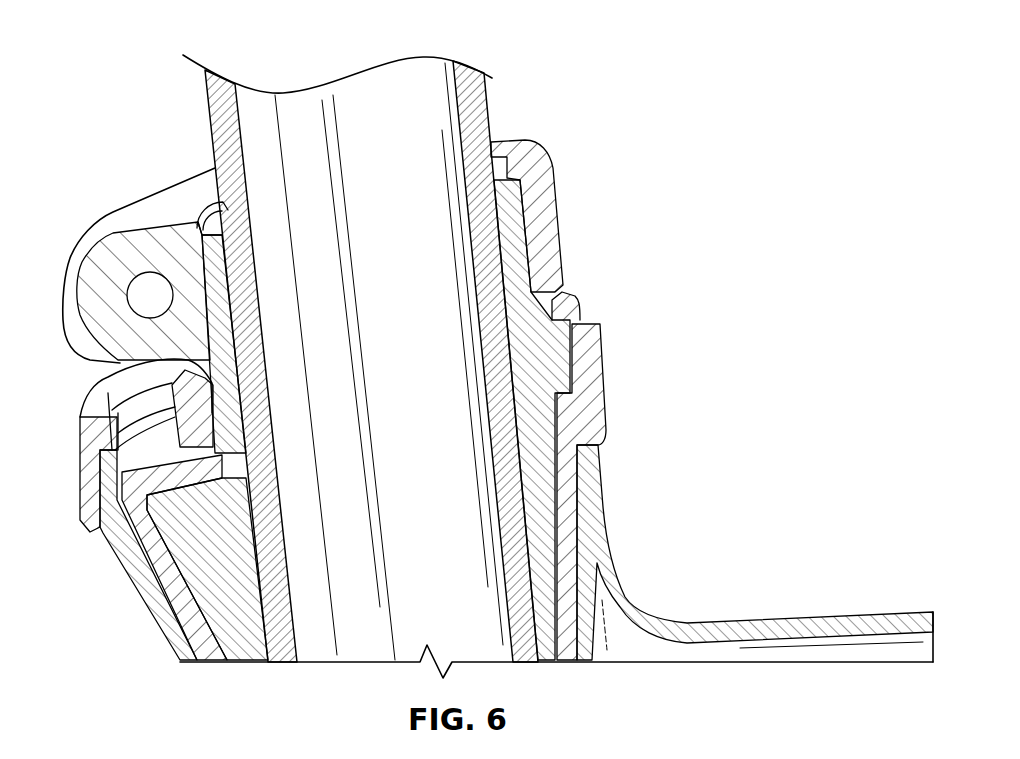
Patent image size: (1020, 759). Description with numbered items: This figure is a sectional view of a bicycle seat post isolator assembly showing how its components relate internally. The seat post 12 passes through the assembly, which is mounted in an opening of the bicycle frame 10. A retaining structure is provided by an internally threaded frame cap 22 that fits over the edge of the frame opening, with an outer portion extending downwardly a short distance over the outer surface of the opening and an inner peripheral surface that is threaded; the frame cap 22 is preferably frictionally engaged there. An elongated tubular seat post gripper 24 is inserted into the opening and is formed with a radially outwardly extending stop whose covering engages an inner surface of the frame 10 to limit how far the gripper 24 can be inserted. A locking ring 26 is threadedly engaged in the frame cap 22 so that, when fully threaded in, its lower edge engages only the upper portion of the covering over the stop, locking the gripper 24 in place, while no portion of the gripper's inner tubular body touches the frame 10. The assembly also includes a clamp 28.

The frame 10 is at (620, 597).
The seat post 12 is at (213, 90).
The frame cap 22 is at (600, 348).
The seat post gripper 24 is at (538, 504).
The locking ring 26 is at (575, 300).
The clamp 28 is at (82, 252).